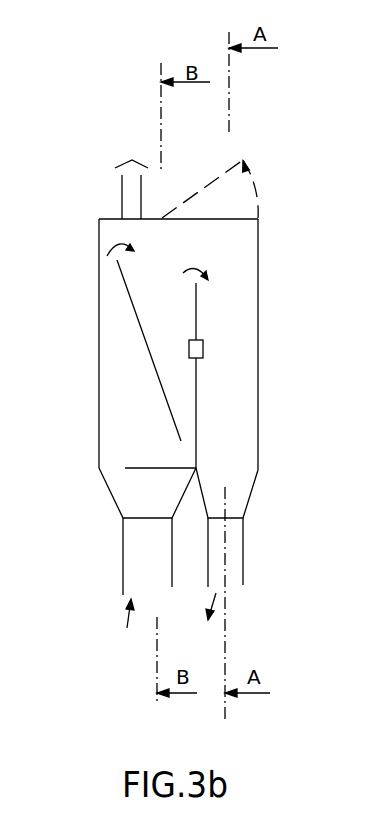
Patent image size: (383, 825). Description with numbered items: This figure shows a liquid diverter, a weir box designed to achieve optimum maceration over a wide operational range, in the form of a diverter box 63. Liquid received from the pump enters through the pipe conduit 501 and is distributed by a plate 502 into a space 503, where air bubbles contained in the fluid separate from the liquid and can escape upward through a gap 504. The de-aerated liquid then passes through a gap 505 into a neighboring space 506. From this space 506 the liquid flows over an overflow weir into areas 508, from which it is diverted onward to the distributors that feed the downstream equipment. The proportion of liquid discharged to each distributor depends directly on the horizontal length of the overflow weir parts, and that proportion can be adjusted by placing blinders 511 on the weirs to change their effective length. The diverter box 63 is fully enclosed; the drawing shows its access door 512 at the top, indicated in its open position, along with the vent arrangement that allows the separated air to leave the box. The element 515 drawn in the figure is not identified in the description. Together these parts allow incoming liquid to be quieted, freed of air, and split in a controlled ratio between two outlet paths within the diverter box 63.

The diverter box 63 is at (258, 255).
The pipe conduit 501 is at (132, 562).
The plate 502 is at (134, 470).
The space 503 is at (100, 418).
The gap 504 is at (105, 261).
The gap 505 is at (184, 446).
The space 506 is at (180, 304).
The areas 508 is at (247, 442).
The blinders 511 is at (202, 340).
The access door 512 is at (219, 163).
The partition 515 is at (197, 408).